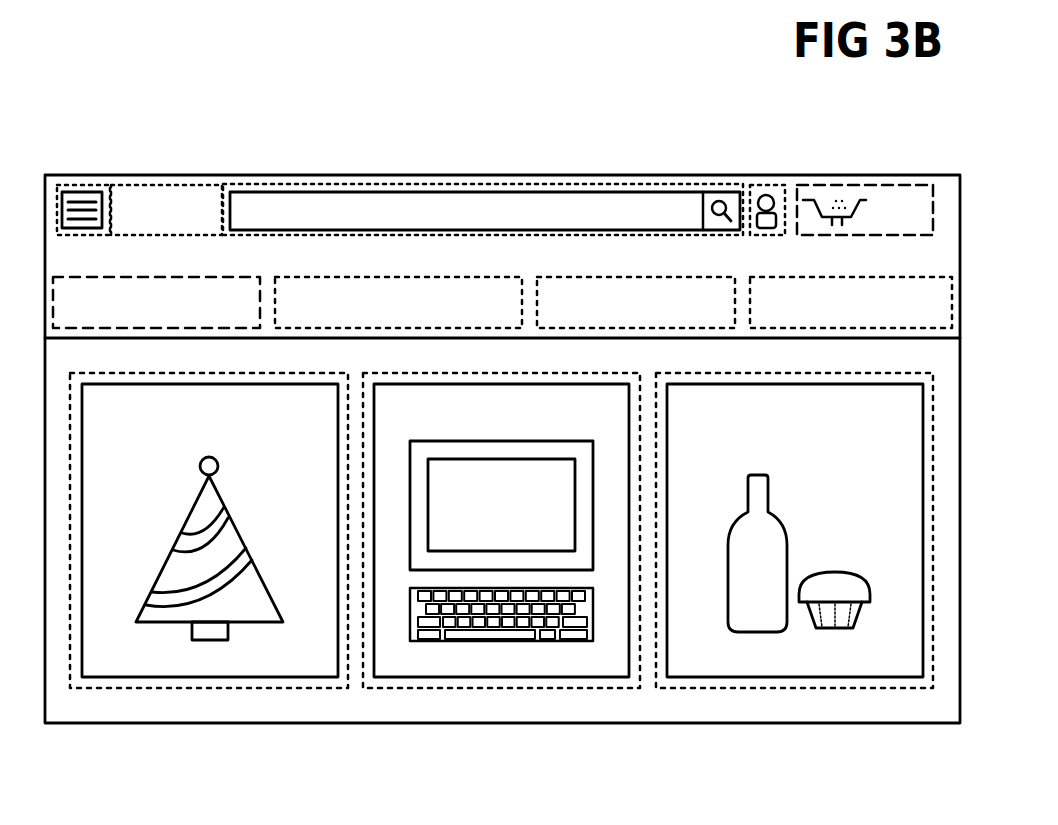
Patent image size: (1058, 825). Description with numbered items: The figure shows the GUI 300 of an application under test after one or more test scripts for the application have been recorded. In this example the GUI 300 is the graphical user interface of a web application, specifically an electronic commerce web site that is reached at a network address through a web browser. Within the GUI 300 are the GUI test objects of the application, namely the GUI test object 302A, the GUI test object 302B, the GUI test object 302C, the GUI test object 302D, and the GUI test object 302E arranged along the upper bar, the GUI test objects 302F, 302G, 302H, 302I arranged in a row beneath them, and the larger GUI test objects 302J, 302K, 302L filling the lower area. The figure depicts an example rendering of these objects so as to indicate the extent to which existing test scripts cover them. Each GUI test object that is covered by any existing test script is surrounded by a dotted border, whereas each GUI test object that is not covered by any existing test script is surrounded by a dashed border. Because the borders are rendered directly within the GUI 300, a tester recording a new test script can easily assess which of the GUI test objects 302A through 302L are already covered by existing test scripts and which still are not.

The GUI 300 is at (240, 722).
The GUI test object 302A is at (92, 192).
The GUI test object 302B is at (174, 190).
The GUI test object 302C is at (374, 190).
The GUI test object 302D is at (772, 190).
The GUI test object 302E is at (872, 190).
The GUI test object 302F is at (182, 284).
The GUI test object 302G is at (437, 284).
The GUI test object 302H is at (638, 284).
The GUI test object 302I is at (839, 284).
The GUI test object 302J is at (157, 677).
The GUI test object 302K is at (450, 677).
The GUI test object 302L is at (743, 677).